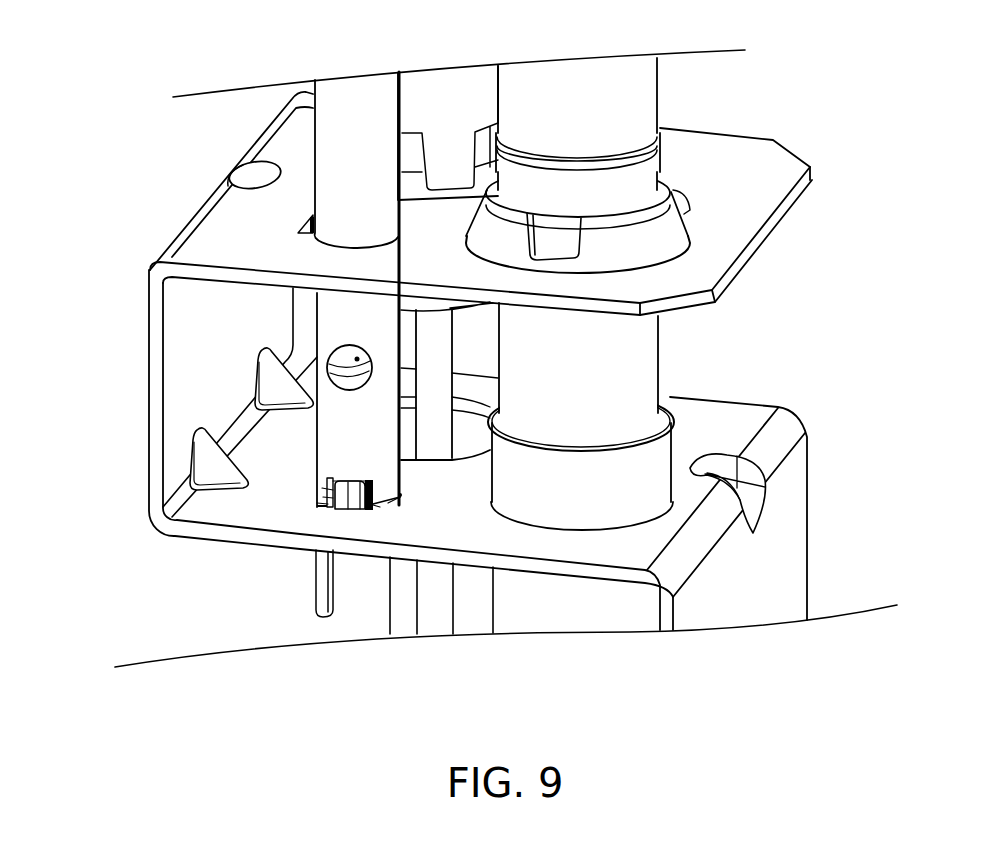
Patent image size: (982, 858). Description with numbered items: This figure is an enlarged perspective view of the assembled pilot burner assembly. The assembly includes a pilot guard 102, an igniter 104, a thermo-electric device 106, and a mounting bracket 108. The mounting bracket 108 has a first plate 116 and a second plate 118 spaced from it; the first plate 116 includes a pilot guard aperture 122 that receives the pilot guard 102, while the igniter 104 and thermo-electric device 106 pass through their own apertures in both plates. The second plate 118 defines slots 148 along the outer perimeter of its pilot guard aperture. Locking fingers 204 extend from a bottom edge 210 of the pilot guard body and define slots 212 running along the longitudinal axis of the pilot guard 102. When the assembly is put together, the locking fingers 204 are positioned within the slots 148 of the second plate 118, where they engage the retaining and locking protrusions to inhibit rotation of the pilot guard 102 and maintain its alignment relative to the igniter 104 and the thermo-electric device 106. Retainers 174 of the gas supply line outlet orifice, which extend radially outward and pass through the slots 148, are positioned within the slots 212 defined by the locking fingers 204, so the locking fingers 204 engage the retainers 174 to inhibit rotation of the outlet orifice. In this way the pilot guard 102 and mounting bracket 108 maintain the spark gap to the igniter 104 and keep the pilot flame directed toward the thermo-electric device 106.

The pilot guard 102 is at (298, 130).
The igniter 104 is at (458, 97).
The thermo-electric device 106 is at (677, 329).
The mounting bracket 108 is at (134, 379).
The first plate 116 is at (743, 144).
The second plate 118 is at (735, 416).
The pilot guard aperture 122 is at (307, 247).
The slots 148 is at (318, 503).
The retainers 174 is at (352, 487).
The locking fingers 204 is at (322, 488).
The bottom edge 210 is at (332, 480).
The slots 212 is at (327, 495).